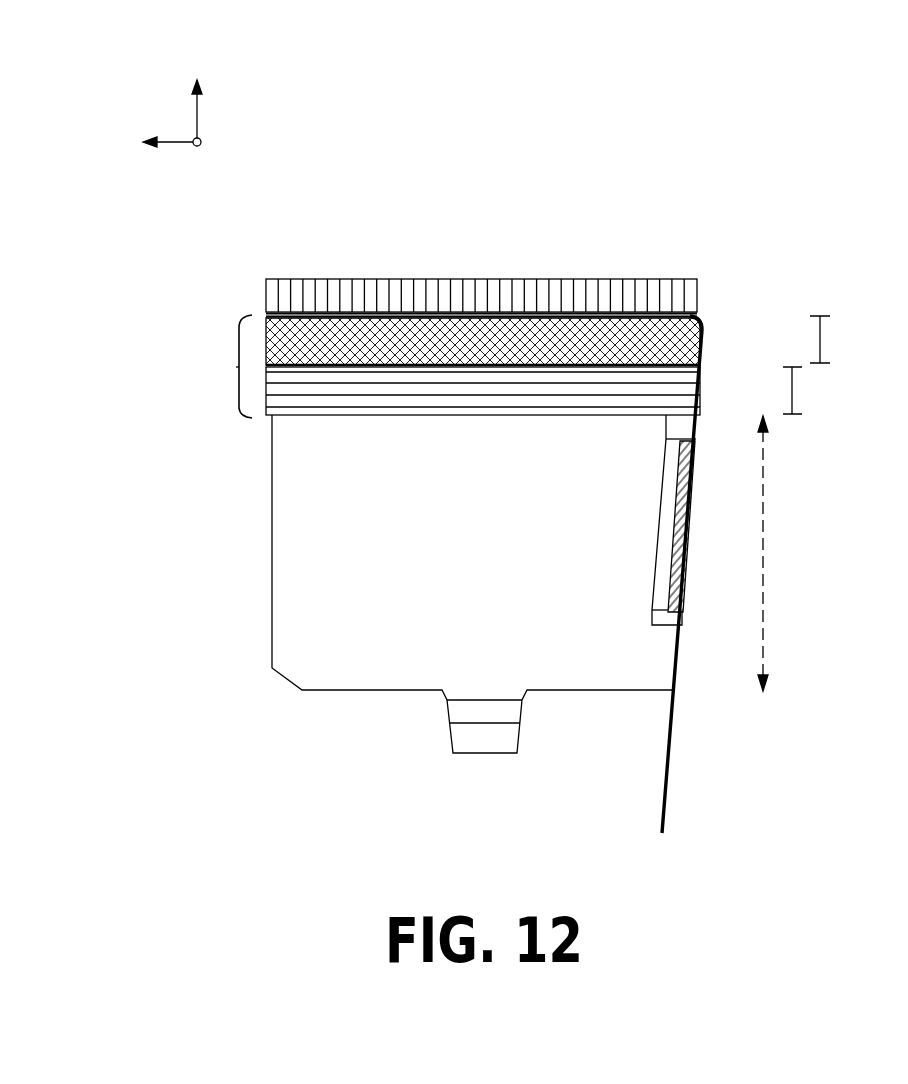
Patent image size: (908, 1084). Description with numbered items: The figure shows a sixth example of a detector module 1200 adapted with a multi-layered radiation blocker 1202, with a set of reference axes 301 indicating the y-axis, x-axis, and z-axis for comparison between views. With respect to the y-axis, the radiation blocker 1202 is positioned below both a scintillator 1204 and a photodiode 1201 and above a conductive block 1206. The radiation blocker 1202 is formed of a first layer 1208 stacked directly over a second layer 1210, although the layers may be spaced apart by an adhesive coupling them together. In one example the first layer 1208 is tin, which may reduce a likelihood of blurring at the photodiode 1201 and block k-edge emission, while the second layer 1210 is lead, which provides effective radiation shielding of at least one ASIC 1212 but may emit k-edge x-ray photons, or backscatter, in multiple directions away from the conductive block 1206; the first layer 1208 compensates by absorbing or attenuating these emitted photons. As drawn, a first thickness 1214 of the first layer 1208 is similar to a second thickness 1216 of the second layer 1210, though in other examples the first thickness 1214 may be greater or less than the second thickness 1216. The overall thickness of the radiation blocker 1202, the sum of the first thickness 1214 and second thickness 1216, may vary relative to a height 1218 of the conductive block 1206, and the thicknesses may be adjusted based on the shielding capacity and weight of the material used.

The reference axes 301 is at (172, 92).
The detector module 1200 is at (318, 213).
The photodiode 1201 is at (693, 314).
The radiation blocker 1202 is at (239, 367).
The scintillator 1204 is at (483, 278).
The conductive block 1206 is at (488, 527).
The first layer 1208 is at (703, 341).
The second layer 1210 is at (703, 385).
The ASIC 1212 is at (696, 516).
The first thickness 1214 is at (820, 343).
The second thickness 1216 is at (793, 378).
The height 1218 is at (766, 563).